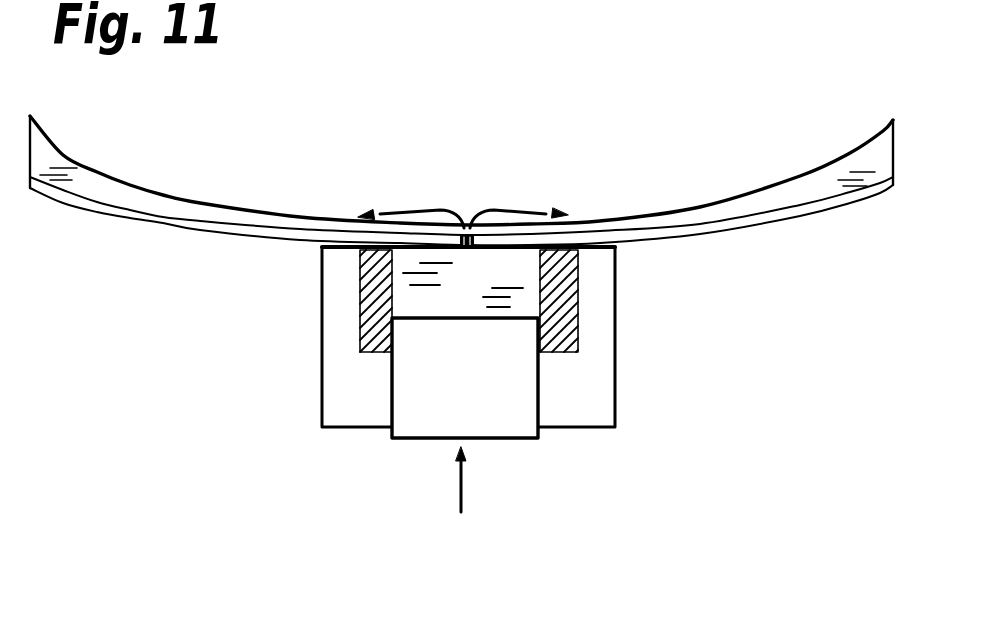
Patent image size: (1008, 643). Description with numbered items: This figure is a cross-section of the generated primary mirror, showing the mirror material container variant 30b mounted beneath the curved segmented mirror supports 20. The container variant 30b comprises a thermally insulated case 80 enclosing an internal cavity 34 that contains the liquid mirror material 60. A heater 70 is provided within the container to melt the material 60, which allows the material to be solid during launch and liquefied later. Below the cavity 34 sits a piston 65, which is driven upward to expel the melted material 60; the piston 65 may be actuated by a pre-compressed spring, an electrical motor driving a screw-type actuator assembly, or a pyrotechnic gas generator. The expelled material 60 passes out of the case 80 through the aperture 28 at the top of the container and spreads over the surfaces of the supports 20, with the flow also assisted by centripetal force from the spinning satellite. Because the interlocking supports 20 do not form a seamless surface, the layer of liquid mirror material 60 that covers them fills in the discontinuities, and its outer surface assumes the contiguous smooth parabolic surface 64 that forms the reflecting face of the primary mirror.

The segmented mirror support 20 is at (160, 222).
The liquid mirror material 60 is at (143, 203).
The contiguous smooth parabolic surface 64 is at (777, 187).
The aperture 28 is at (472, 204).
The thermally insulated case 80 is at (468, 337).
The heater 70 is at (578, 298).
The piston 65 is at (465, 378).
The internal cavity 34 is at (509, 305).
The container variant 30b is at (270, 370).